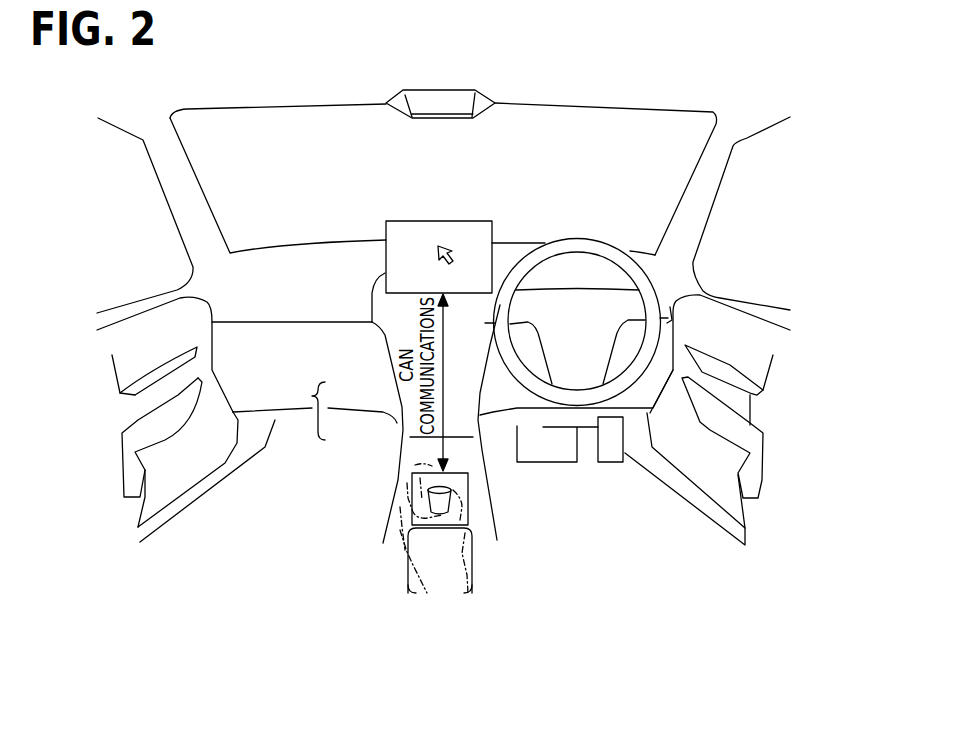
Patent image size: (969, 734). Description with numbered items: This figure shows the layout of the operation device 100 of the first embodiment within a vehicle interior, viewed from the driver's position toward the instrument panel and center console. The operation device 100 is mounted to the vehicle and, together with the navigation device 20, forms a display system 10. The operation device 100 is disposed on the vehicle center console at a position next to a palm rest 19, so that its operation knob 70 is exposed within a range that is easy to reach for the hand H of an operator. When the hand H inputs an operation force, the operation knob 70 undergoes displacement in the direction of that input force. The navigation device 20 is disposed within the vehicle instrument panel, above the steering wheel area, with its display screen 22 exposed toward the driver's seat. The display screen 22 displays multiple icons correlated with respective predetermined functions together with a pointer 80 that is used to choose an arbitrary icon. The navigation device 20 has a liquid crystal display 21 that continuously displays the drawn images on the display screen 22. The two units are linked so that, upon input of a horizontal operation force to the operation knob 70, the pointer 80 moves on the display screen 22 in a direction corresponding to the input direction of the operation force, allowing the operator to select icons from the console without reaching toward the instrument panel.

The display system 10 is at (300, 410).
The palm rest 19 is at (408, 573).
The navigation device 20 is at (370, 323).
The liquid crystal display 21 is at (453, 220).
The display screen 22 is at (407, 230).
The operation knob 70 is at (468, 488).
The pointer 80 is at (437, 243).
The operation device 100 is at (444, 471).
The hand H is at (457, 512).